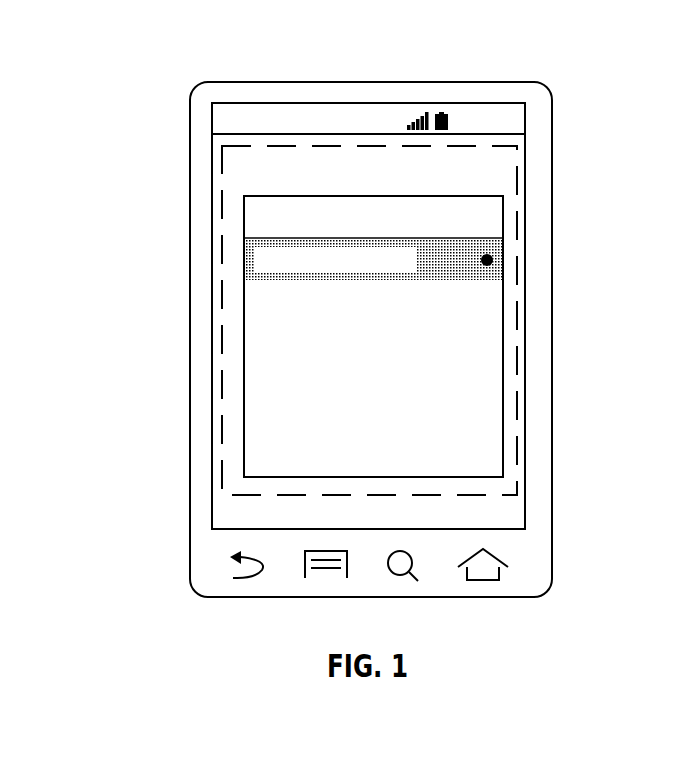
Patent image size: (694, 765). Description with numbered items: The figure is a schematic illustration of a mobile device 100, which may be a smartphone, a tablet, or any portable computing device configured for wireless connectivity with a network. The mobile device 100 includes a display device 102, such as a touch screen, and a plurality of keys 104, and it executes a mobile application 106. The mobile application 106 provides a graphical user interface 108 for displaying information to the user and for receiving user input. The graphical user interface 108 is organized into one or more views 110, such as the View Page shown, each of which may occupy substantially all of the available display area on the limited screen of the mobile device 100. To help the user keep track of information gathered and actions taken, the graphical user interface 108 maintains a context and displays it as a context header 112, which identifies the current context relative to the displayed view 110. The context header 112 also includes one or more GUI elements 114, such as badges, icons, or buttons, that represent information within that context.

The mobile device 100 is at (234, 81).
The display device 102 is at (523, 102).
The keys 104 is at (530, 555).
The mobile application 106 is at (450, 186).
The graphical user interface 108 is at (490, 173).
The view 110 is at (240, 213).
The context header 112 is at (243, 273).
The GUI element 114 is at (493, 260).